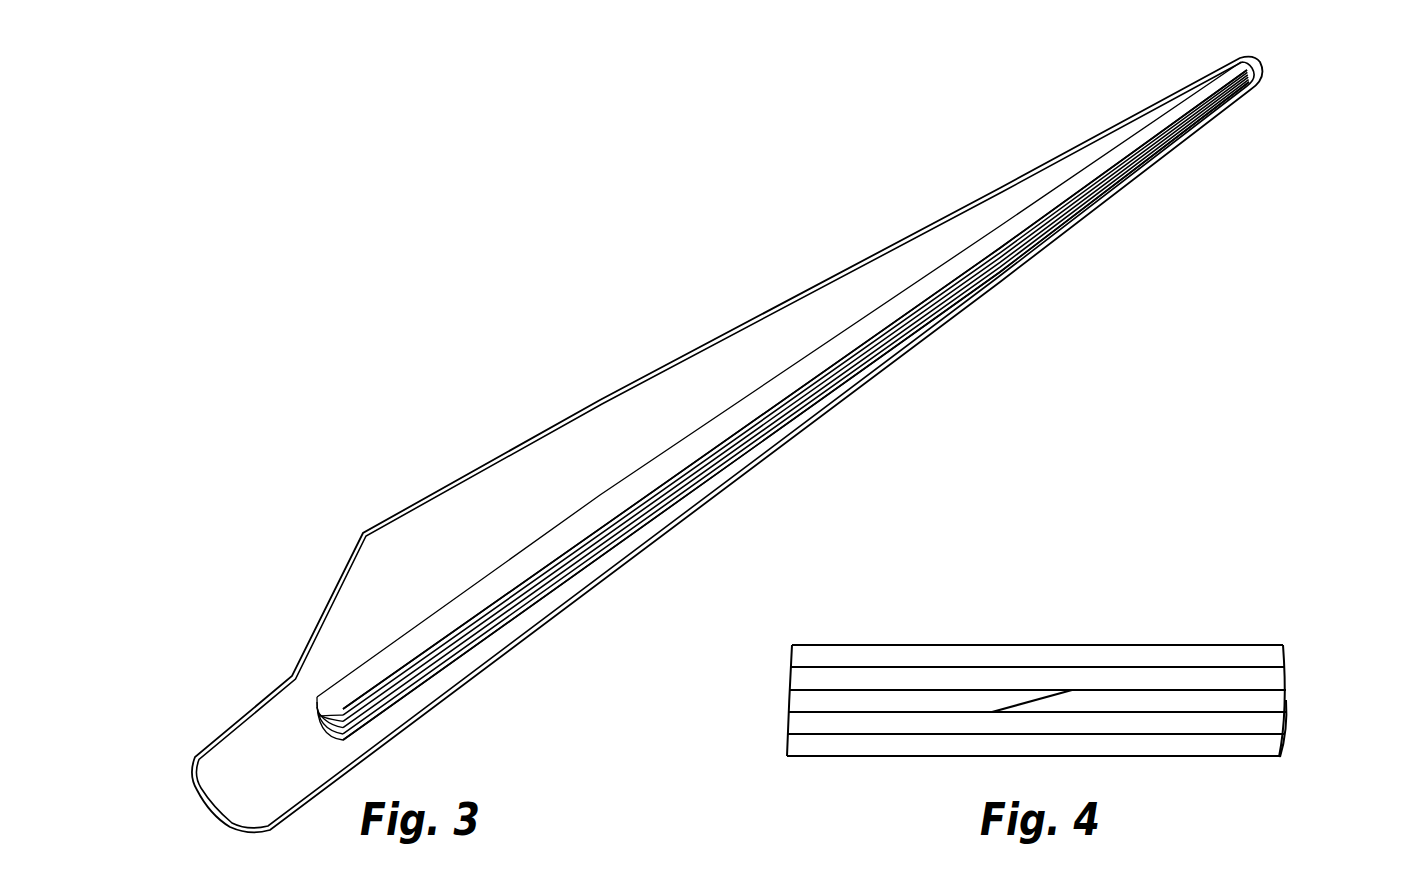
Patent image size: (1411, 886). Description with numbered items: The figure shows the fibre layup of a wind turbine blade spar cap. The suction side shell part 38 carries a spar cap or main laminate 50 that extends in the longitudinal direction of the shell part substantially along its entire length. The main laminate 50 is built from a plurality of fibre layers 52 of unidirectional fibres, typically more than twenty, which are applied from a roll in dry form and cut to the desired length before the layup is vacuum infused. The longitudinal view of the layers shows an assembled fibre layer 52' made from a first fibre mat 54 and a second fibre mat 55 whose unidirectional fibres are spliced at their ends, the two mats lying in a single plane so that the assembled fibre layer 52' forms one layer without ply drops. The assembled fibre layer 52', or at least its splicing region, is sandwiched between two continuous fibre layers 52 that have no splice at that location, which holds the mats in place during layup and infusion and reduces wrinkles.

In FIG. 3, the suction side shell part 38 is at (502, 640).
In FIG. 3, the main laminate 50 is at (573, 565).
In FIG. 3, the fibre layers 52 is at (796, 405).
In FIG. 4, the fibre layers 52 is at (1081, 698).
In FIG. 4, the assembled fibre layer 52' is at (1191, 708).
In FIG. 4, the first fibre mat 54 is at (808, 700).
In FIG. 4, the second fibre mat 55 is at (1290, 710).